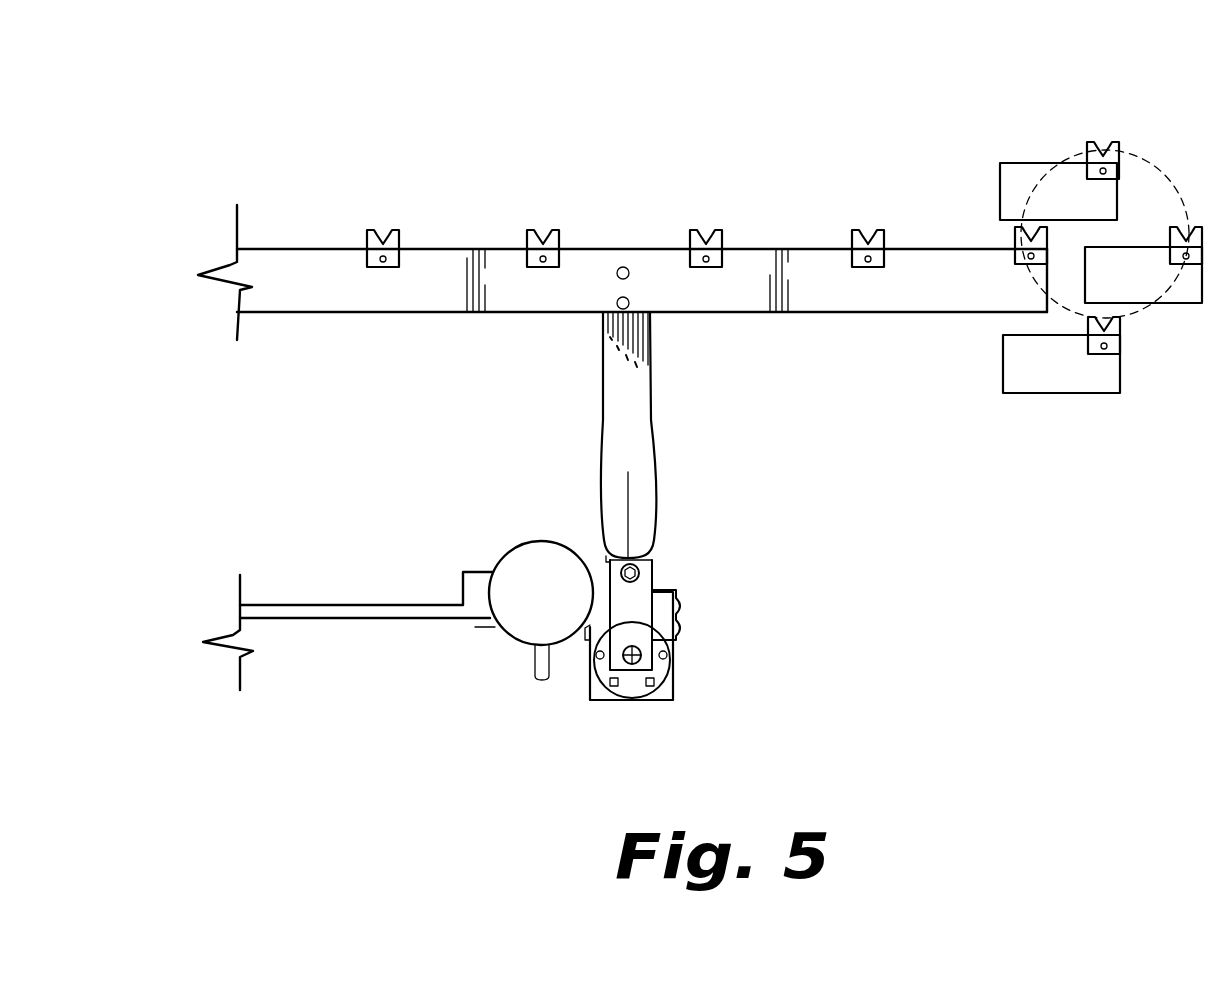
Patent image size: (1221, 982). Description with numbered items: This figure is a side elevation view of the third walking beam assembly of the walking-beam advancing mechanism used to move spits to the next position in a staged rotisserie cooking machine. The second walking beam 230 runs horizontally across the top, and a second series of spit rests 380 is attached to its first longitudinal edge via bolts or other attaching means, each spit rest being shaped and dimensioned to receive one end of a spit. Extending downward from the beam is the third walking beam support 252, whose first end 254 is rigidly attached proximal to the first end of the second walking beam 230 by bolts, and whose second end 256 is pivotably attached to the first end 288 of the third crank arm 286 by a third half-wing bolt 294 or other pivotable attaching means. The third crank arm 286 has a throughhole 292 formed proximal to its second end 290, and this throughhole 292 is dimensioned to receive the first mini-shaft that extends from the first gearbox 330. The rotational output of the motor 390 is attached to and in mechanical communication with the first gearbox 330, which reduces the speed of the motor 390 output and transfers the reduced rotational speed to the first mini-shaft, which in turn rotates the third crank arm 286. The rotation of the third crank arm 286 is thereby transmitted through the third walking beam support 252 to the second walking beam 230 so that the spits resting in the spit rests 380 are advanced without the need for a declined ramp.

The second walking beam 230 is at (333, 275).
The second series of spit rests 380 is at (700, 238).
The first end 254 is at (617, 330).
The third walking beam support 252 is at (650, 372).
The second end 256 is at (657, 548).
The third half-wing bolt 294 is at (607, 558).
The first end 288 is at (643, 585).
The third crank arm 286 is at (680, 612).
The second end 290 is at (673, 668).
The throughhole 292 is at (595, 700).
The first gearbox 330 is at (675, 693).
The motor 390 is at (527, 572).